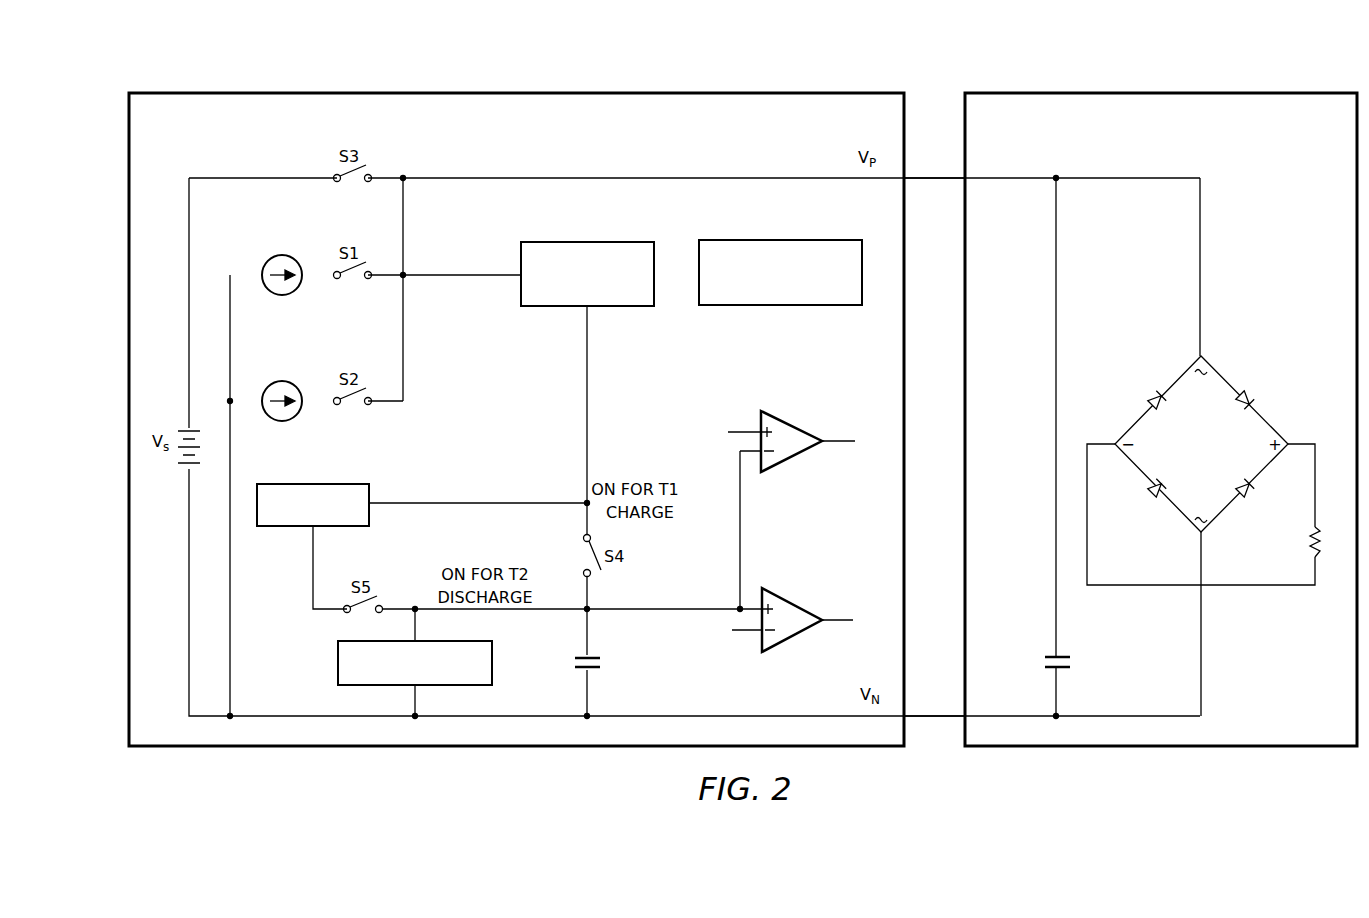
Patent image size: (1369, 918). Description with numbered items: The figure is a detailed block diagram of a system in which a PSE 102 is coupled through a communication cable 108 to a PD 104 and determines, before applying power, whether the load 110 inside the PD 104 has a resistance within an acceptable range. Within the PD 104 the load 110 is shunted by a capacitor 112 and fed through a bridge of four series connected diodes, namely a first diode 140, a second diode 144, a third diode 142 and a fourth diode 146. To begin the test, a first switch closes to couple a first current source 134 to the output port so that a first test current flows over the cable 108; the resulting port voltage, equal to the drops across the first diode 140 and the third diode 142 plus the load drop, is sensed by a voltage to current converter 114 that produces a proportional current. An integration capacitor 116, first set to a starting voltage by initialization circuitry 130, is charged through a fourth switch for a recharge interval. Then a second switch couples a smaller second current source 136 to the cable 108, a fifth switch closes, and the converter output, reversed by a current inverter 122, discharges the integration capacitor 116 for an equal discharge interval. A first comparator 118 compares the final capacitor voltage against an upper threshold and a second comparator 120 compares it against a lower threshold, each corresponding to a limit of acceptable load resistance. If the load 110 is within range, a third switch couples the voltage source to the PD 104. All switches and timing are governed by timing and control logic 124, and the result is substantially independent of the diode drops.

The PSE 102 is at (493, 91).
The PD 104 is at (1221, 90).
The communication cable 108 is at (921, 176).
The load RL 110 is at (1310, 545).
The shunt capacitor CL 112 is at (1044, 662).
The voltage to current converter 114 is at (576, 241).
The integration capacitor Cint 116 is at (574, 662).
The comparator 118 is at (790, 462).
The comparator 120 is at (795, 644).
The current inverter 122 is at (286, 527).
The timing and control logic 124 is at (784, 240).
The initialization circuitry 130 is at (337, 660).
The first current source 134 is at (276, 296).
The second current source 136 is at (284, 422).
The diode D1 140 is at (1248, 398).
The diode D3 142 is at (1158, 491).
The diode D2 144 is at (1247, 491).
The diode D4 146 is at (1160, 398).